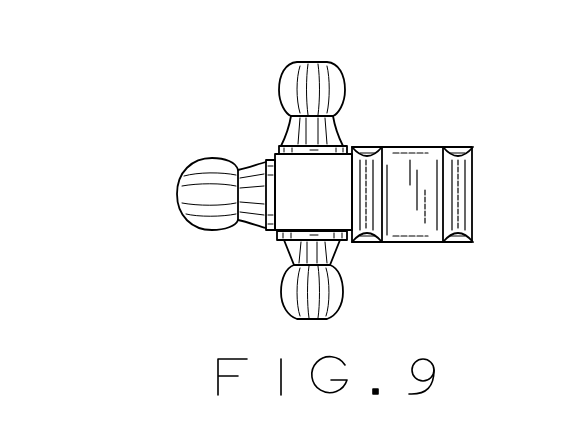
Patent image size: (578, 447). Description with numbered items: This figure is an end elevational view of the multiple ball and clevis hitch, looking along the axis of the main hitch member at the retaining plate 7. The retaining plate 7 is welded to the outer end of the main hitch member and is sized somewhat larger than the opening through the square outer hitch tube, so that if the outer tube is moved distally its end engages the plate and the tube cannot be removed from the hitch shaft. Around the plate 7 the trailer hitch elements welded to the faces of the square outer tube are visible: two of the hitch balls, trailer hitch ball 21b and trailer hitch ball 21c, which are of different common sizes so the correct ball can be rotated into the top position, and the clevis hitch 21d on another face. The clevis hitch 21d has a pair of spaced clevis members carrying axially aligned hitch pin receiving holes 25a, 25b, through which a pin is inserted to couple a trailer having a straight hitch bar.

The retaining plate 7 is at (318, 186).
The trailer hitch ball 21b is at (338, 62).
The trailer hitch ball 21c is at (208, 230).
The clevis hitch 21d is at (422, 146).
The hitch pin receiving hole 25a is at (370, 189).
The hitch pin receiving hole 25b is at (456, 192).